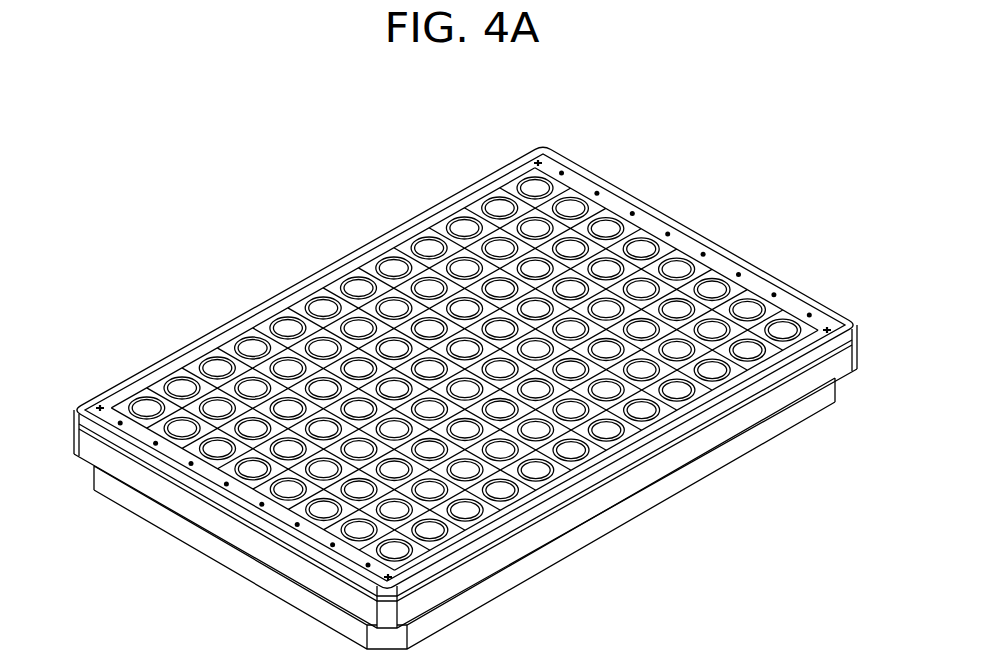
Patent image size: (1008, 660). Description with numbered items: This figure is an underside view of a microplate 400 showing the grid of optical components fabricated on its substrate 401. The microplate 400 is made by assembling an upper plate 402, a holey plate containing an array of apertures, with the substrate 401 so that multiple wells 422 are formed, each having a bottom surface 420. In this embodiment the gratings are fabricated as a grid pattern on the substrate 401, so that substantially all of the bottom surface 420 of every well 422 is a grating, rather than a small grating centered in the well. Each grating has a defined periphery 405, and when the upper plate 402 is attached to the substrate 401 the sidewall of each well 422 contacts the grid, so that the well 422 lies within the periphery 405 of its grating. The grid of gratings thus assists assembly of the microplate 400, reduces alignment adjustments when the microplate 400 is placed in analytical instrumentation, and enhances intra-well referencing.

The microplate 400 is at (340, 190).
The substrate 401 is at (637, 225).
The upper plate 402 is at (620, 207).
The periphery of the grating 405 is at (718, 282).
The bottom surface of the well 420 is at (430, 328).
The well 422 is at (748, 362).